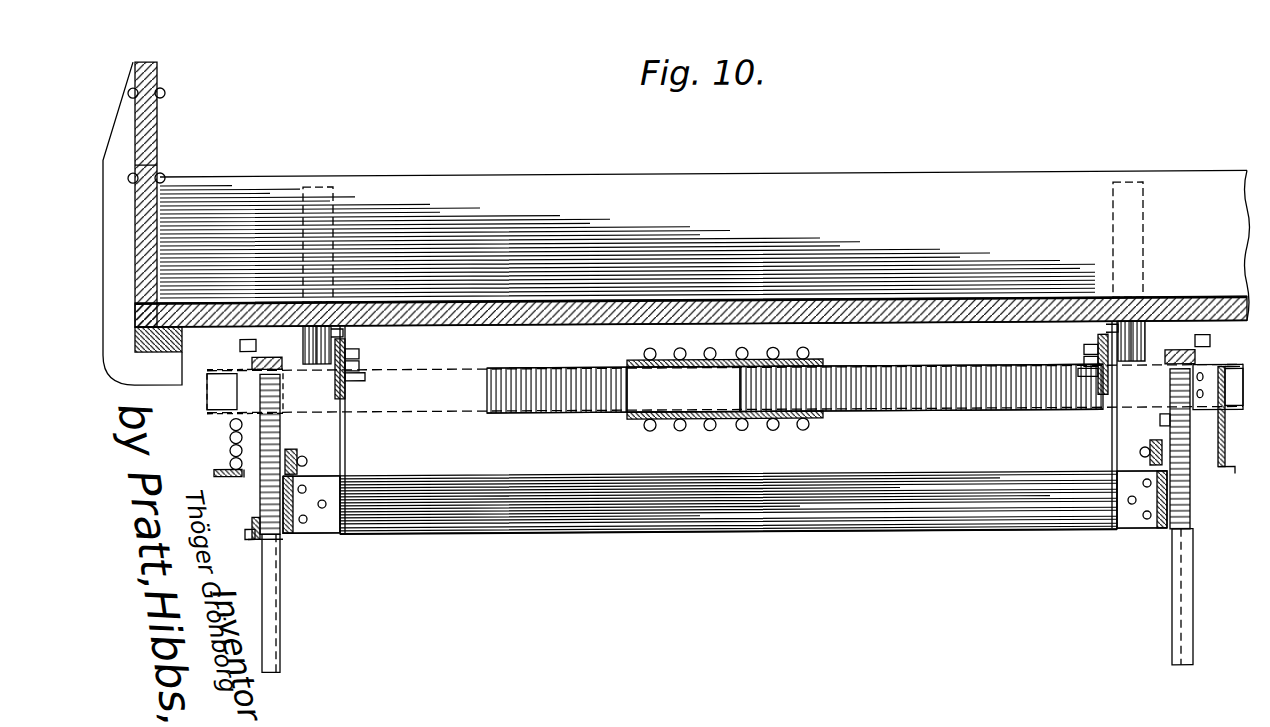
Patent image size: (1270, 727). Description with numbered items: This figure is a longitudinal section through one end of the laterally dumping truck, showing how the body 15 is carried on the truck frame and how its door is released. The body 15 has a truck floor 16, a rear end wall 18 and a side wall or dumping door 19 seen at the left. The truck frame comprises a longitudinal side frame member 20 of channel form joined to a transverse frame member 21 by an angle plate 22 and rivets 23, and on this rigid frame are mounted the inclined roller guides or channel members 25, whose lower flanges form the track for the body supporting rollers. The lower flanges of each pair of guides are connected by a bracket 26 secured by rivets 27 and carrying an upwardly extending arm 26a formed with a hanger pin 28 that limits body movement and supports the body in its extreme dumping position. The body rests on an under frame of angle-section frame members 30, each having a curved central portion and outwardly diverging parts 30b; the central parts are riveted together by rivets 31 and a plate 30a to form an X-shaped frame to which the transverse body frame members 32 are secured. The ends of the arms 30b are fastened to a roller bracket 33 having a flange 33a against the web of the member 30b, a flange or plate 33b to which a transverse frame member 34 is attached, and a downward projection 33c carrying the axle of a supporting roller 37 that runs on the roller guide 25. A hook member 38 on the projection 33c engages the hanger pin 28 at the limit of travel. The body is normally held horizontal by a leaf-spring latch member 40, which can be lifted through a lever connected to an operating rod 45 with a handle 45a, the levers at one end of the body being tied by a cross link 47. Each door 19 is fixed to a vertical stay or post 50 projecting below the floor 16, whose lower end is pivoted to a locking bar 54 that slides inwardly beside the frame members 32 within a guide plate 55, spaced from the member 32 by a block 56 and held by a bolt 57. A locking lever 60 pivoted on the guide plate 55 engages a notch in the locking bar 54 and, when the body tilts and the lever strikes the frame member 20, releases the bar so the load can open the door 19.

The body 15 is at (705, 224).
The truck floor 16 is at (928, 303).
The rear end wall 18 is at (160, 82).
The side wall or dumping door 19 is at (705, 248).
The longitudinal side frame member 20 is at (668, 535).
The transverse frame member 21 is at (297, 540).
The angle plate 22 is at (725, 526).
The rivet 23 is at (326, 508).
The inclined roller guide or channel member 25 is at (283, 640).
The bracket 26 is at (703, 370).
The upwardly extending arm 26a is at (1188, 345).
The rivet 27 is at (1232, 353).
The hanger pin 28 is at (240, 347).
The frame member 30 is at (725, 388).
The plate 30a is at (712, 363).
The outwardly diverging part 30b is at (513, 370).
The rivet 31 is at (808, 357).
The transverse body frame member 32 is at (347, 338).
The roller bracket 33 is at (1200, 560).
The flange 33a is at (328, 328).
The flange or plate 33b is at (229, 432).
The downward projection 33c is at (260, 490).
The transverse frame member 34 is at (220, 470).
The supporting roller 37 is at (240, 556).
The hook member 38 is at (262, 540).
The latch member 40 is at (728, 343).
The operating rod 45 is at (725, 449).
The handle 45a is at (310, 480).
The cross link 47 is at (340, 455).
The vertical stay or post 50 is at (334, 187).
The locking bar 54 is at (721, 353).
The guide plate 55 is at (721, 367).
The block 56 is at (375, 355).
The bolt 57 is at (721, 382).
The locking lever 60 is at (350, 436).